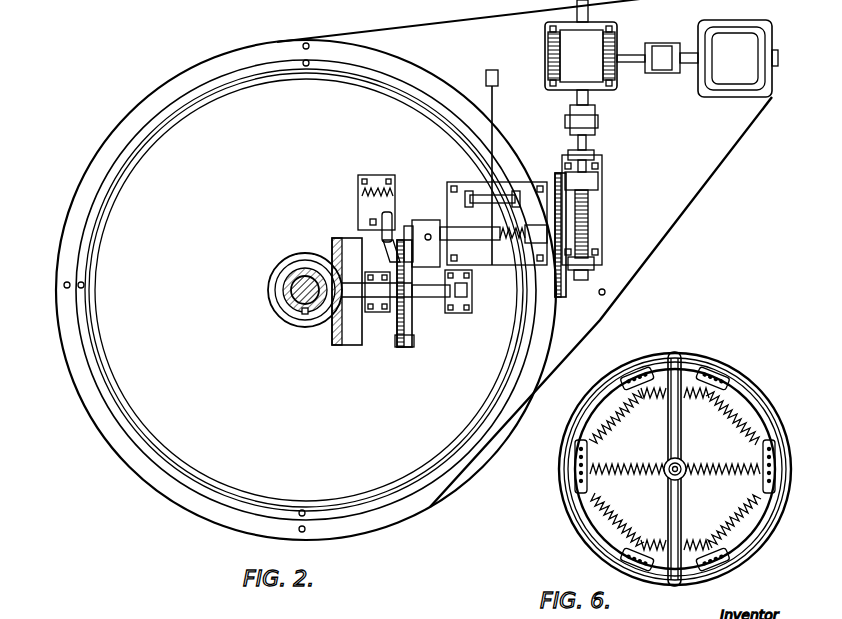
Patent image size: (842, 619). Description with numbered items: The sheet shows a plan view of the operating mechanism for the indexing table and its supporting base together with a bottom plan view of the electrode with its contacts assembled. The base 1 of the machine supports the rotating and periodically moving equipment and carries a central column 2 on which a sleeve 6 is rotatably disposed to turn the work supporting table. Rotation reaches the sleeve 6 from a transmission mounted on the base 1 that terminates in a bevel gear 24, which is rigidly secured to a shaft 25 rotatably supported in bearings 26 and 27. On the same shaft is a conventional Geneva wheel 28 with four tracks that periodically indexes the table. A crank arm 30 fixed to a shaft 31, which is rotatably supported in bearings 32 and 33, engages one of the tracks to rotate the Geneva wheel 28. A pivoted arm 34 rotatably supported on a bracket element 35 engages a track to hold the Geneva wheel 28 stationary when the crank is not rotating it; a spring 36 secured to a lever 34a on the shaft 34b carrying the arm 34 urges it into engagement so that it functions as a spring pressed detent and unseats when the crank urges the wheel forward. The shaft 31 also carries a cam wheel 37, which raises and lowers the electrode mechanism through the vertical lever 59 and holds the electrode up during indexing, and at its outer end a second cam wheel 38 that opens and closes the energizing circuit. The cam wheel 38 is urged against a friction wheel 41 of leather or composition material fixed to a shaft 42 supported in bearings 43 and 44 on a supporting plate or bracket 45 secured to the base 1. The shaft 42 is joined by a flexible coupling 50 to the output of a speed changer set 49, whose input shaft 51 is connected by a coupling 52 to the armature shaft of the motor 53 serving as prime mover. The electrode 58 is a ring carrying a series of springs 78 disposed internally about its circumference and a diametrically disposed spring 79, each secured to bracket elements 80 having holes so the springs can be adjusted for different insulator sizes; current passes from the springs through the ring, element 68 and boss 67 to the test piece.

In FIG. 2, the base 1 is at (686, 200).
In FIG. 2, the central column 2 is at (292, 303).
In FIG. 2, the sleeve 6 is at (300, 288).
In FIG. 2, the bevel gear 24 is at (336, 340).
In FIG. 2, the shaft 25 is at (432, 297).
In FIG. 2, the bearing 26 is at (382, 312).
In FIG. 2, the bearing 27 is at (458, 313).
In FIG. 2, the Geneva wheel 28 is at (404, 347).
In FIG. 2, the crank arm 30 is at (410, 226).
In FIG. 2, the shaft 31 is at (470, 240).
In FIG. 2, the bearing 32 is at (532, 225).
In FIG. 2, the bearing 33 is at (435, 228).
In FIG. 2, the pivoted arm 34 is at (390, 252).
In FIG. 2, the lever 34a is at (389, 212).
In FIG. 2, the shaft 34b is at (372, 202).
In FIG. 2, the bracket element 35 is at (369, 222).
In FIG. 2, the spring 36 is at (375, 178).
In FIG. 2, the cam wheel 37 is at (485, 240).
In FIG. 2, the second cam wheel 38 is at (558, 297).
In FIG. 2, the friction wheel 41 is at (600, 178).
In FIG. 2, the shaft 42 is at (589, 222).
In FIG. 2, the bearing 43 is at (596, 268).
In FIG. 2, the bearing 44 is at (596, 155).
In FIG. 2, the supporting plate or bracket 45 is at (603, 245).
In FIG. 2, the speed changer set 49 is at (548, 50).
In FIG. 2, the flexible coupling 50 is at (597, 122).
In FIG. 2, the input shaft 51 is at (634, 50).
In FIG. 2, the coupling 52 is at (668, 44).
In FIG. 2, the motor 53 is at (736, 22).
In FIG. 6, the electrode 58 is at (748, 374).
In FIG. 2, the vertical lever 59 is at (493, 70).
In FIG. 6, the boss 67 is at (665, 462).
In FIG. 6, the element 68 is at (668, 494).
In FIG. 6, the springs 78 is at (622, 422).
In FIG. 6, the diametrically disposed spring 79 is at (706, 464).
In FIG. 6, the bracket elements 80 is at (637, 372).